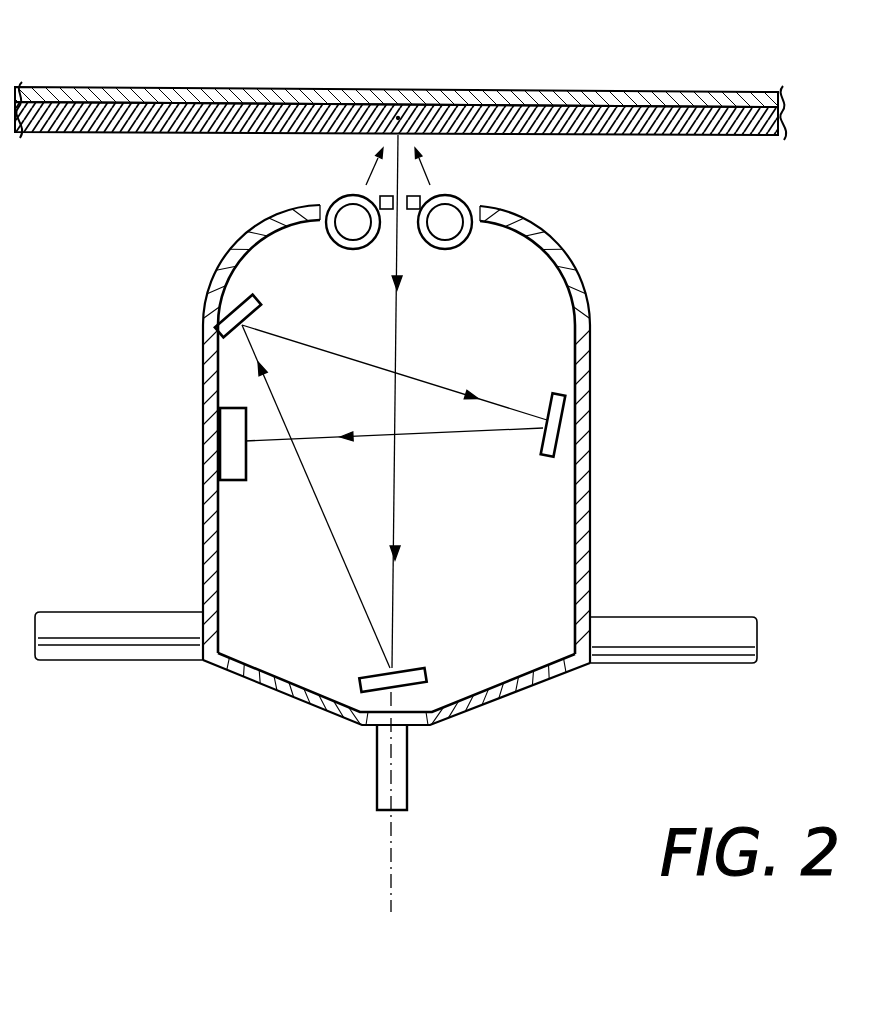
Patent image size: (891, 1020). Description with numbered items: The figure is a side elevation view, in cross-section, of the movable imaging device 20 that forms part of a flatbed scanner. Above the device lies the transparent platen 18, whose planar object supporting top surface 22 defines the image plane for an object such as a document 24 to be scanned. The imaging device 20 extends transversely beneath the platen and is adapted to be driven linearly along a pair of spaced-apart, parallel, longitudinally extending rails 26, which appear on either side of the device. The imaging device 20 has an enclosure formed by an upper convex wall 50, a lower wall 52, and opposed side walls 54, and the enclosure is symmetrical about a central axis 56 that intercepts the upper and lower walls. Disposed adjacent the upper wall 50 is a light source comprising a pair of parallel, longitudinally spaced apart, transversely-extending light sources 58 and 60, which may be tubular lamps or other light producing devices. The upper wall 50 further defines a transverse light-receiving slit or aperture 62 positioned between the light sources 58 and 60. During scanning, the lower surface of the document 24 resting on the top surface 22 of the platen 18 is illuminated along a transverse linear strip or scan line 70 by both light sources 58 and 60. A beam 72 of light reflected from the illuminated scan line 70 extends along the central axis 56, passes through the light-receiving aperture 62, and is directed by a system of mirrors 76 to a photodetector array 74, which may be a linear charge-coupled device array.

The transparent platen 18 is at (443, 77).
The imaging device 20 is at (665, 328).
The object supporting top surface 22 is at (528, 102).
The document 24 is at (660, 95).
The rails 26 is at (715, 615).
The upper convex wall 50 is at (396, 472).
The lower wall 52 is at (505, 702).
The side walls 54 is at (203, 500).
The central axis 56 is at (390, 890).
The light source 58 is at (343, 196).
The light source 60 is at (455, 196).
The light-receiving aperture 62 is at (393, 218).
The scan line 70 is at (393, 108).
The beam of light 72 is at (400, 328).
The photodetector array 74 is at (247, 475).
The mirrors 76 is at (252, 314).